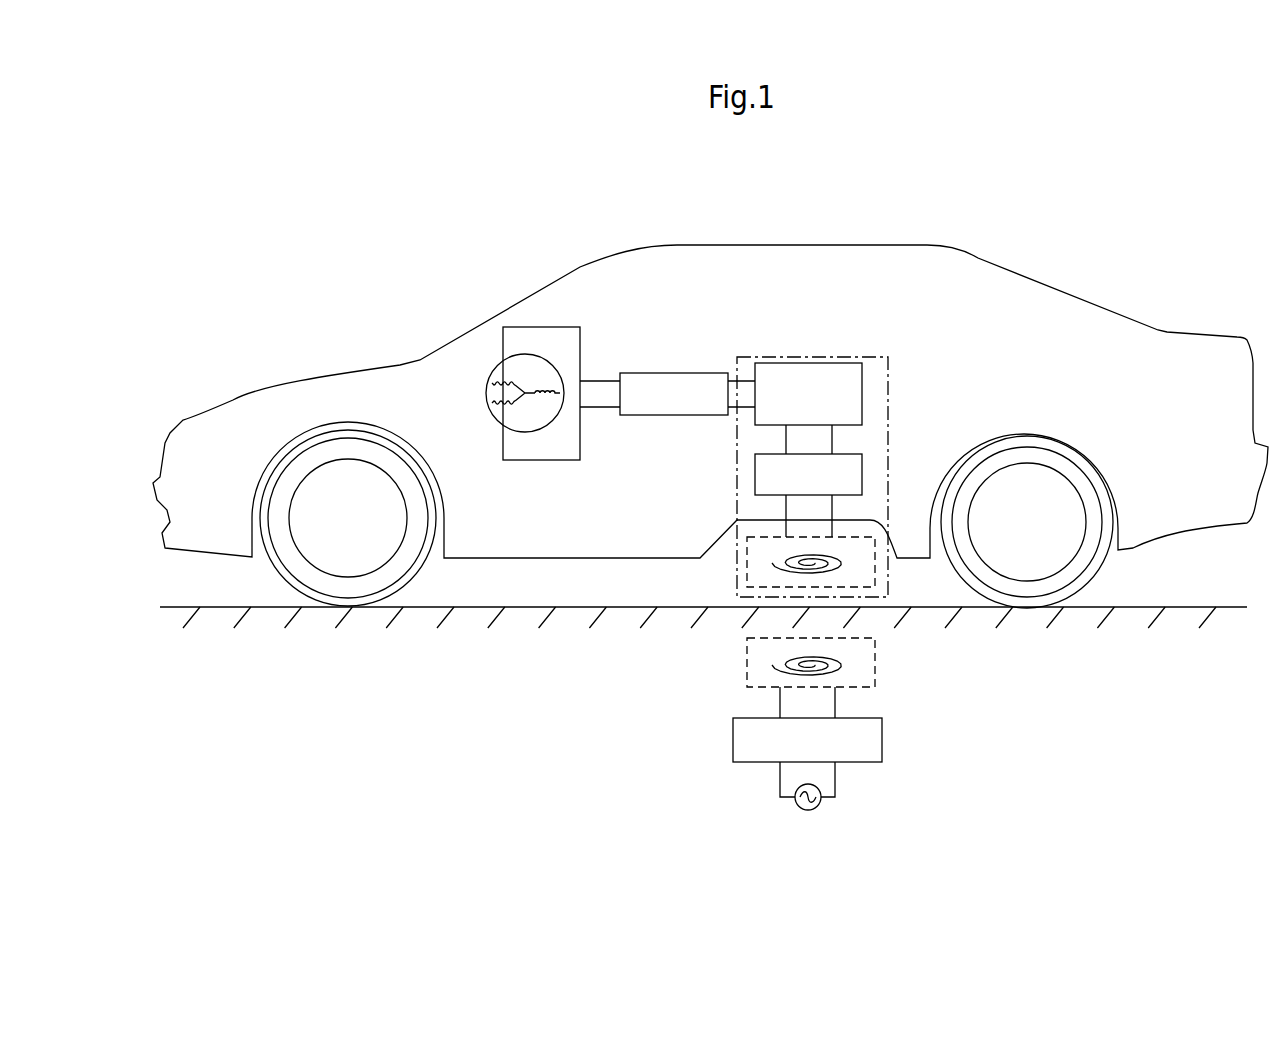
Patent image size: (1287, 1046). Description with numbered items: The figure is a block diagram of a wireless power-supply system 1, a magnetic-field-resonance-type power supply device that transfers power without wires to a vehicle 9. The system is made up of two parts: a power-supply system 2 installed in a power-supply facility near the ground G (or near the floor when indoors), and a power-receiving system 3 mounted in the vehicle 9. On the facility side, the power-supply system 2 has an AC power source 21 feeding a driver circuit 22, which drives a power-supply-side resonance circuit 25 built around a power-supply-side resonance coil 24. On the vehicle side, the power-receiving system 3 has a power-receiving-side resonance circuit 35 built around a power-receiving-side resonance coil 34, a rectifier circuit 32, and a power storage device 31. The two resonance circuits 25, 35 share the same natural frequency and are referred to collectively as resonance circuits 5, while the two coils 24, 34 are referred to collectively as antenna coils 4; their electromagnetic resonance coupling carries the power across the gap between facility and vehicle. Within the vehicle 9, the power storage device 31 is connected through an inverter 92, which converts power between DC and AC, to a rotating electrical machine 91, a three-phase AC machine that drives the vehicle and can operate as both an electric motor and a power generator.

The wireless power-supply system 1 is at (892, 318).
The power-supply system 2 is at (918, 705).
The power-receiving system 3 is at (892, 388).
The antenna coils 4 is at (806, 564).
The resonance circuits 5 is at (811, 562).
The vehicle 9 is at (731, 245).
The AC power source 21 is at (812, 810).
The driver circuit 22 is at (883, 742).
The power-supply-side resonance coil 24 is at (777, 665).
The power-supply-side resonance circuit 25 is at (875, 650).
The power storage device 31 is at (803, 363).
The rectifier circuit 32 is at (753, 473).
The power-receiving-side resonance coil 34 is at (777, 562).
The power-receiving-side resonance circuit 35 is at (882, 557).
The rotating electrical machine 91 is at (492, 403).
The inverter 92 is at (672, 372).
The ground G is at (1207, 607).